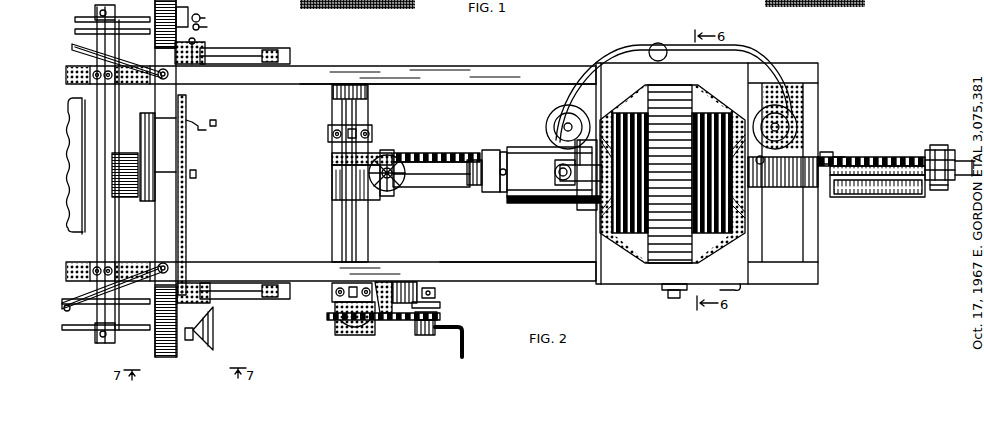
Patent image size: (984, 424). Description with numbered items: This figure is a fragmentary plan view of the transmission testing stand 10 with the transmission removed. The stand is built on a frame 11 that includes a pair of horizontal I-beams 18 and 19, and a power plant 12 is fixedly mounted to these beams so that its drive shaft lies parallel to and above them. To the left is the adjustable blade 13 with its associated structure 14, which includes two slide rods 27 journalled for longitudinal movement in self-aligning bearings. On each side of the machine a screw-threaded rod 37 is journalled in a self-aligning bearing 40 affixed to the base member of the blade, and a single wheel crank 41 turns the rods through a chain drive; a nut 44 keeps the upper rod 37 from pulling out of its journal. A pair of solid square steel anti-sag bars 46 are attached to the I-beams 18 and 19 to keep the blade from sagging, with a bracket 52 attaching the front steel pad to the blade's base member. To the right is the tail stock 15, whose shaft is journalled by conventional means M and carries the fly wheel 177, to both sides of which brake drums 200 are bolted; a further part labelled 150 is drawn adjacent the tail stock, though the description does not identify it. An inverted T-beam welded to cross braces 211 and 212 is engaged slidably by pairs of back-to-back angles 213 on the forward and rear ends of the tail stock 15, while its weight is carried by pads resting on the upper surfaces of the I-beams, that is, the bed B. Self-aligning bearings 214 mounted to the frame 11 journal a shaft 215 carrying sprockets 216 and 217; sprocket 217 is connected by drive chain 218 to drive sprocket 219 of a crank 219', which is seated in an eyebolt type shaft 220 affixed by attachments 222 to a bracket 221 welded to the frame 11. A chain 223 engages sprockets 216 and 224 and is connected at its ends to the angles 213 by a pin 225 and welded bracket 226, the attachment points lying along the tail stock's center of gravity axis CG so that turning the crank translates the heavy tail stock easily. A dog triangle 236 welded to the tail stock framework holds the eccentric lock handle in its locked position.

The testing stand 10 is at (532, 52).
The frame 11 is at (284, 266).
The power plant 12 is at (74, 136).
The adjustable blade 13 is at (164, 163).
The associated structure 14 is at (139, 262).
The tail stock 15 is at (632, 282).
The horizontal I-beam 18 is at (499, 262).
The horizontal I-beam 19 is at (482, 84).
The slide rods 27 is at (75, 26).
The screw-threaded rod 37 is at (90, 330).
The self-aligning bearing 40 is at (196, 16).
The wheel crank 41 is at (214, 316).
The nut 44 is at (204, 27).
The anti-sag bars 46 is at (244, 52).
The bracket 52 is at (204, 56).
The bearing block 150 is at (586, 212).
The fly wheel 177 is at (670, 90).
The brake drums 200 is at (626, 110).
The cross brace 211 is at (818, 106).
The cross brace 212 is at (354, 118).
The back-to-back angles 213 is at (864, 156).
The self-aligning bearings 214 is at (332, 306).
The shaft 215 is at (332, 204).
The sprocket 216 is at (330, 160).
The sprocket 217 is at (328, 322).
The drive chain 218 is at (392, 320).
The drive sprocket 219 is at (451, 310).
The crank 219' is at (474, 338).
The eyebolt type shaft 220 is at (427, 333).
The bracket 221 is at (438, 300).
The attachments 222 is at (434, 290).
The chain 223 is at (906, 148).
The sprocket 224 is at (954, 158).
The pin 225 is at (840, 158).
The welded bracket 226 is at (826, 154).
The dog triangle 236 is at (728, 288).
The bed B is at (283, 84).
The conventional journal means M is at (767, 192).
The center of gravity axis CG is at (967, 176).